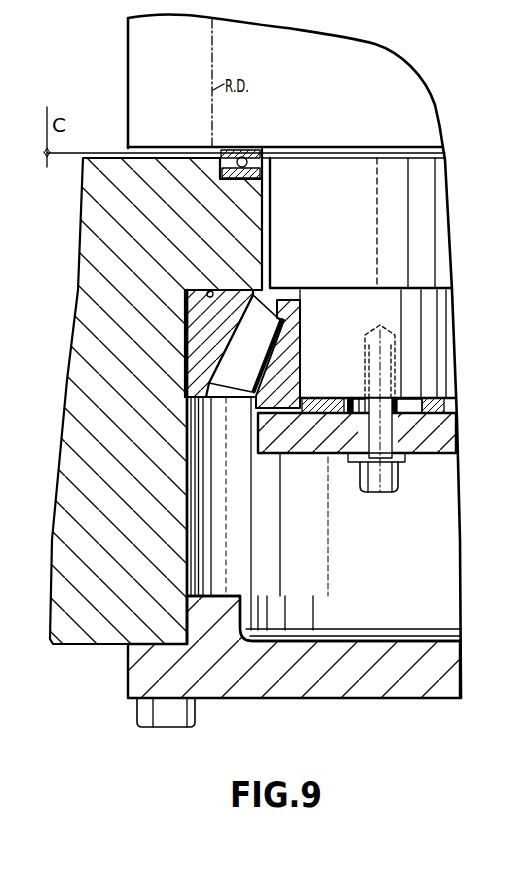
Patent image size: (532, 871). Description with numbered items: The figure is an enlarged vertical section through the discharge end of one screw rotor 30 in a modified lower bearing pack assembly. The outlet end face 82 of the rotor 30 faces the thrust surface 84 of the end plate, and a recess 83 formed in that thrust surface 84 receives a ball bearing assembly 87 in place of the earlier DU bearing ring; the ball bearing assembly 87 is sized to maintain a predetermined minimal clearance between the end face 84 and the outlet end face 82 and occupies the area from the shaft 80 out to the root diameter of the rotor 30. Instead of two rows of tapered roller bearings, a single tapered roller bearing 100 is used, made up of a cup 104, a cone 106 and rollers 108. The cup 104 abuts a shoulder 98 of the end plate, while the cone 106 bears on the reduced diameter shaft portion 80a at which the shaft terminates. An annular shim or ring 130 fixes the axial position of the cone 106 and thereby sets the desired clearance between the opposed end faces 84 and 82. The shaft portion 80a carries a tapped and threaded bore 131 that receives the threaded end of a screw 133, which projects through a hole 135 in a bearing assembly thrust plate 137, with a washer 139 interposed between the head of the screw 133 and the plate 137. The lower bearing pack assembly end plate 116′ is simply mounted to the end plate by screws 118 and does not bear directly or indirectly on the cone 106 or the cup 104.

The rotor 30 is at (432, 128).
The outlet end face of rotor 82 is at (160, 148).
The thrust surface 84 is at (183, 158).
The ball bearing assembly 87 is at (242, 152).
The recess 83 is at (264, 187).
The shaft 80 is at (438, 237).
The reduced diameter shaft portion 80a is at (452, 337).
The shoulder 98 is at (210, 291).
The cup 104 is at (195, 330).
The rollers 108 is at (258, 340).
The cone 106 is at (288, 365).
The single tapered roller bearing 100 is at (238, 403).
The annular shim or ring 130 is at (320, 396).
The tapped and threaded bore 131 is at (396, 368).
The hole 135 is at (393, 432).
The bearing assembly thrust plate 137 is at (308, 438).
The washer 139 is at (412, 462).
The screw 133 is at (378, 491).
The lower bearing pack assembly end plate 116′ is at (380, 683).
The screws 118 is at (197, 710).